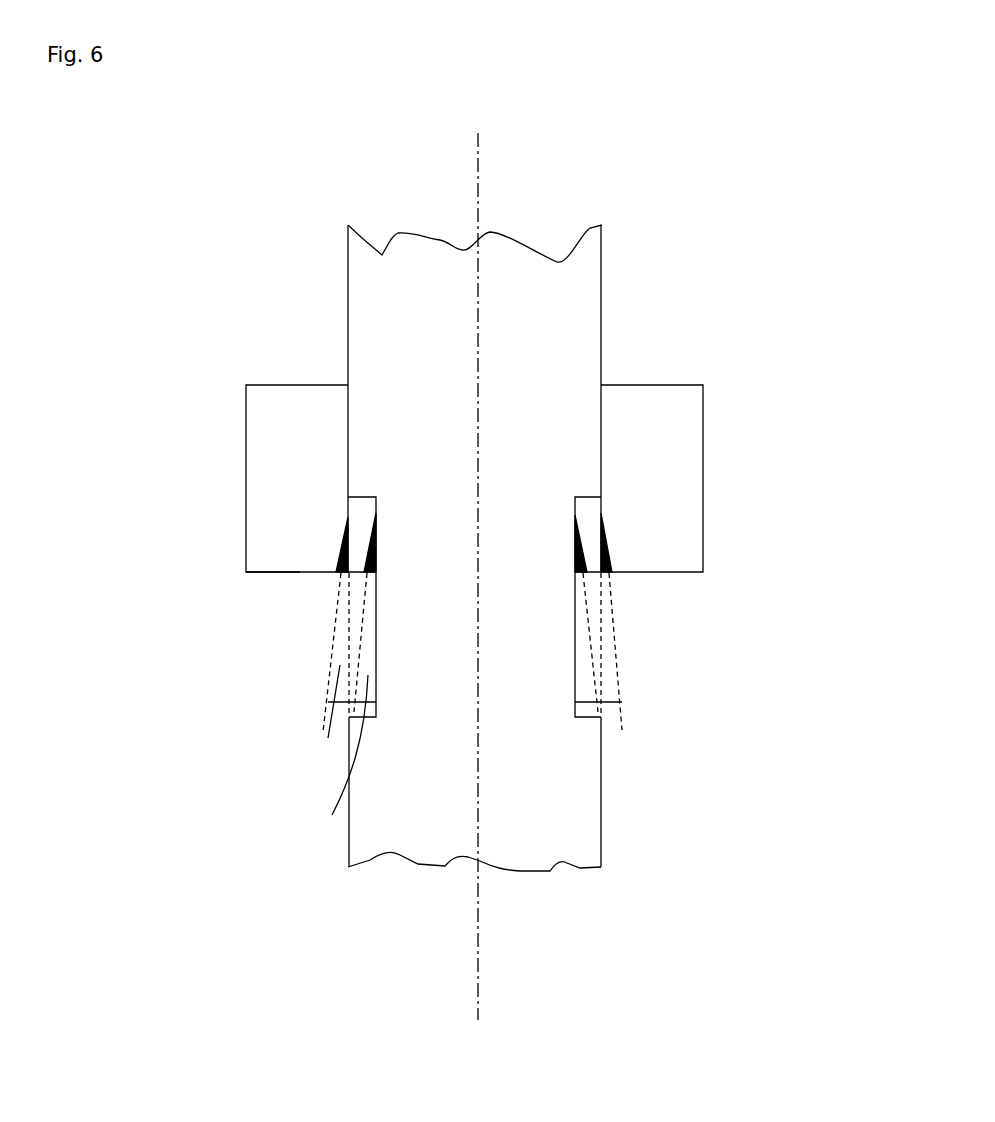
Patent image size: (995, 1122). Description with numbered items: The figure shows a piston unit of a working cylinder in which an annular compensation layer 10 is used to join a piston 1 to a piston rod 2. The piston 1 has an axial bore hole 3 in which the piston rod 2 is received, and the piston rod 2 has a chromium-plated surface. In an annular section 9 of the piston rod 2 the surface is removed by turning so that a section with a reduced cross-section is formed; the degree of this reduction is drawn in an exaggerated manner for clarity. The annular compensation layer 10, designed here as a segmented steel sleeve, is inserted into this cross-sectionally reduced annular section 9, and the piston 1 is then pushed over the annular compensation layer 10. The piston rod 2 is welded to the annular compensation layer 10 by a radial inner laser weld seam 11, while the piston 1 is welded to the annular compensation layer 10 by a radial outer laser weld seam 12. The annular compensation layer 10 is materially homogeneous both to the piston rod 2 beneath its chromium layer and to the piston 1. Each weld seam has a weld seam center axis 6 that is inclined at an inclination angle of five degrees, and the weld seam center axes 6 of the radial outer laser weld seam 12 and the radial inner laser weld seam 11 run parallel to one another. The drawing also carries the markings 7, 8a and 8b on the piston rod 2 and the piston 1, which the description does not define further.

The piston 1 is at (405, 483).
The piston rod 2 is at (530, 320).
The axial bore hole 3 is at (294, 376).
The weld seam center axis 6 is at (628, 716).
The tube wall / break line 7 is at (476, 251).
The first housing part 8a is at (651, 376).
The second housing part 8b is at (236, 593).
The annular section 9 is at (589, 583).
The annular compensation layer 10 is at (590, 513).
The radial inner laser weld seam 11 is at (367, 557).
The radial outer laser weld seam 12 is at (605, 543).